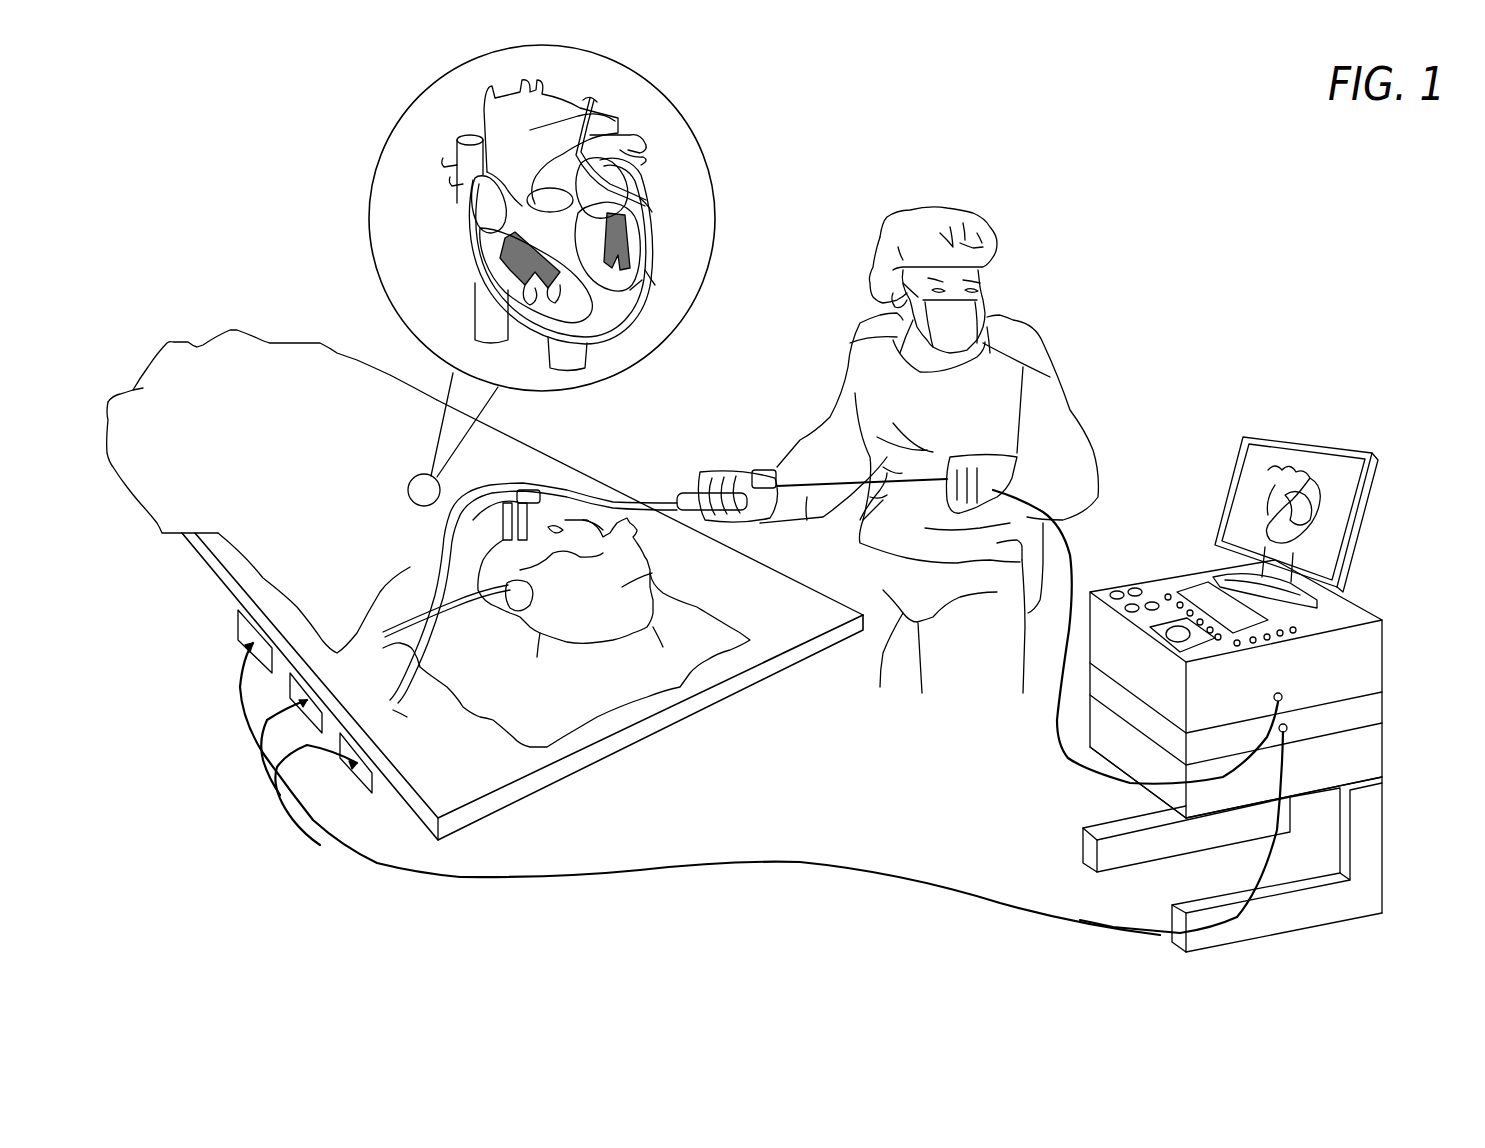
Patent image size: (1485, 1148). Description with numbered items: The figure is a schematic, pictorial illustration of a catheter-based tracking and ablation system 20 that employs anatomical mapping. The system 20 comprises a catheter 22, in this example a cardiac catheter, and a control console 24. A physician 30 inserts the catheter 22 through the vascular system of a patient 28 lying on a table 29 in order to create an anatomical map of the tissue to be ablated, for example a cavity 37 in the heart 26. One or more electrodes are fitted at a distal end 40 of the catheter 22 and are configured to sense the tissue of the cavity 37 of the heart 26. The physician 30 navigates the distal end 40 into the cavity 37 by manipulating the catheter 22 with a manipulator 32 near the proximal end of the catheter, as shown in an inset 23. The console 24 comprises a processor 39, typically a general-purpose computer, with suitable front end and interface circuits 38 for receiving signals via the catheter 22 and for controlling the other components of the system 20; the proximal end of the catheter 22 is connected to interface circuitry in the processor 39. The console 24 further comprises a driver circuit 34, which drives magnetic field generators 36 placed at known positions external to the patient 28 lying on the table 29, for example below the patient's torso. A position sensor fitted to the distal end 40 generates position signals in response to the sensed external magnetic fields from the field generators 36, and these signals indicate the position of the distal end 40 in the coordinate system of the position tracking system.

The catheter-based tracking and ablation system 20 is at (1247, 232).
The catheter 22 is at (597, 99).
The inset 23 is at (375, 178).
The control console 24 is at (1390, 608).
The heart 26 is at (652, 278).
The patient 28 is at (540, 637).
The table 29 is at (657, 720).
The physician 30 is at (885, 258).
The manipulator 32 is at (780, 470).
The driver circuit 34 is at (1383, 662).
The magnetic field generators 36 is at (253, 645).
The cavity 37 is at (642, 288).
The front end and interface circuits 38 is at (1383, 757).
The processor 39 is at (1383, 707).
The distal end 40 is at (647, 208).